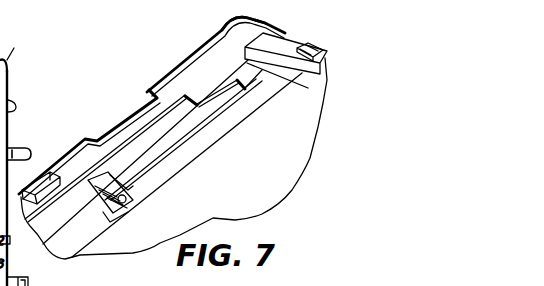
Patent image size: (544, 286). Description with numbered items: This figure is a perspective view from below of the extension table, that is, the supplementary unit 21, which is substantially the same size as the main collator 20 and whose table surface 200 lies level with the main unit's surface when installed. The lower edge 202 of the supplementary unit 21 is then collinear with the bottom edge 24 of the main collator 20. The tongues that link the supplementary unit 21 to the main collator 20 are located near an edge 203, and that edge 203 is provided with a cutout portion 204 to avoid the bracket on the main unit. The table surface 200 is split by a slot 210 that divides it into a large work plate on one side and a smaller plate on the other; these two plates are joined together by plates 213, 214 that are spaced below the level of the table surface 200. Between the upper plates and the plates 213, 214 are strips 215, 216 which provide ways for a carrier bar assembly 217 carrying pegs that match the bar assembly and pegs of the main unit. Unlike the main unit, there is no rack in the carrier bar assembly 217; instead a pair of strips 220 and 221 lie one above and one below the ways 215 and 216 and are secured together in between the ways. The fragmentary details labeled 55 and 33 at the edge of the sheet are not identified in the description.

The main collator 20 is at (14, 48).
The bottom edge 24 is at (22, 51).
The fastener 55 is at (0, 95).
The bracket 33 is at (20, 148).
The supplementary unit 21 is at (166, 71).
The edge 203 is at (163, 60).
The cutout portion 204 is at (142, 104).
The strip 215 is at (133, 146).
The strip 220 is at (210, 89).
The strip 216 is at (236, 123).
The slot 210 is at (252, 72).
The plate 214 is at (300, 78).
The lower edge 202 is at (323, 48).
The plate 213 is at (113, 221).
The carrier bar assembly 217 is at (133, 181).
The strip 221 is at (132, 201).
The table surface 200 is at (260, 176).